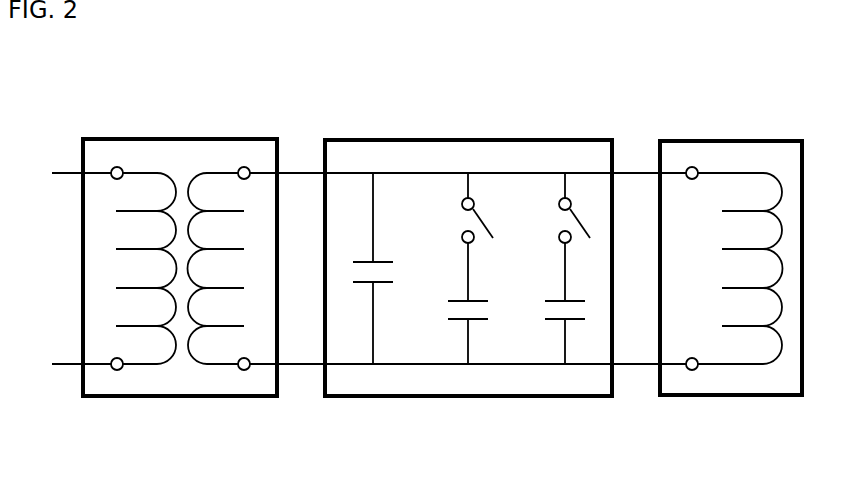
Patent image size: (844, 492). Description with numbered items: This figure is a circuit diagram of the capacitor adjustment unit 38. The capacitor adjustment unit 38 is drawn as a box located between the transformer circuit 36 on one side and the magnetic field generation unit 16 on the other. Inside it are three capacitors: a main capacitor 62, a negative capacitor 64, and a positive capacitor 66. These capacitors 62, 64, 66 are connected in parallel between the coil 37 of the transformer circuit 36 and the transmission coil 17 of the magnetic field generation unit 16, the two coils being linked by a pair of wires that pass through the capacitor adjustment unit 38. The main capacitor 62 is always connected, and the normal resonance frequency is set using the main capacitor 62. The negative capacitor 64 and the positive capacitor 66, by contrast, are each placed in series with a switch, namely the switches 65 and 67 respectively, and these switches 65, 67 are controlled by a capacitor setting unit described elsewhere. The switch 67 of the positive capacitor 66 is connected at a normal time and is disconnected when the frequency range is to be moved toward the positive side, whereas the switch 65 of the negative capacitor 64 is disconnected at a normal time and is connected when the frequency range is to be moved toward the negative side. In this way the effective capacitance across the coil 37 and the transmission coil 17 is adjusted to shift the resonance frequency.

The magnetic field generation unit 16 is at (702, 139).
The transmission coil 17 is at (763, 170).
The transformer circuit 36 is at (155, 138).
The coil 37 is at (228, 168).
The capacitor adjustment unit 38 is at (423, 138).
The main capacitor 62 is at (362, 285).
The negative capacitor 64 is at (460, 323).
The switch 65 is at (487, 222).
The positive capacitor 66 is at (552, 323).
The switch 67 is at (583, 222).